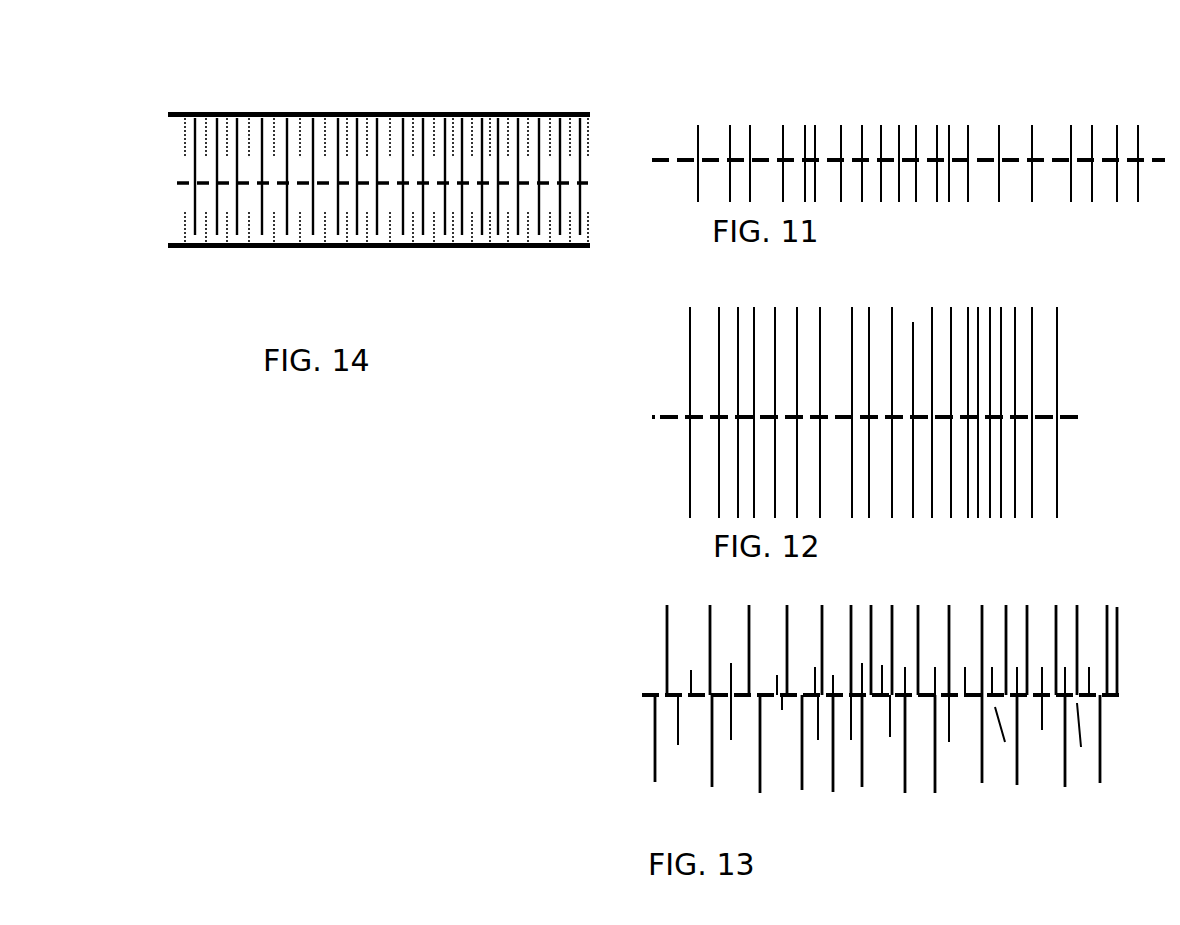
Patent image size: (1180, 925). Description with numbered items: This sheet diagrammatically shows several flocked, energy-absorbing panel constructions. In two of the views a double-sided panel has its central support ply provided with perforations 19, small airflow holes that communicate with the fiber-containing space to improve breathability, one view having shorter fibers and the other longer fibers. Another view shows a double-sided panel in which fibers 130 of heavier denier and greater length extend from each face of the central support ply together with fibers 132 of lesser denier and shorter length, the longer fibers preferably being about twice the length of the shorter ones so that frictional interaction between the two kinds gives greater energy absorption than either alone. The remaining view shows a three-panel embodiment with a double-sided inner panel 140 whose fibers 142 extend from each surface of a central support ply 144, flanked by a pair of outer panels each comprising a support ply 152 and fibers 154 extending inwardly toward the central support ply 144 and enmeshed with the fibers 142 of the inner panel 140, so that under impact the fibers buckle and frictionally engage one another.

In FIG. 11, the perforations 19 is at (840, 147).
In FIG. 12, the fibers 130 is at (1015, 343).
In FIG. 13, the fibers 130 is at (822, 630).
In FIG. 13, the fibers 132 is at (1020, 667).
In FIG. 14, the inner panel 140 is at (334, 206).
In FIG. 14, the fibers 142 is at (315, 140).
In FIG. 14, the central support ply 144 is at (175, 184).
In FIG. 14, the support ply 152 is at (387, 113).
In FIG. 14, the fibers 154 is at (298, 140).